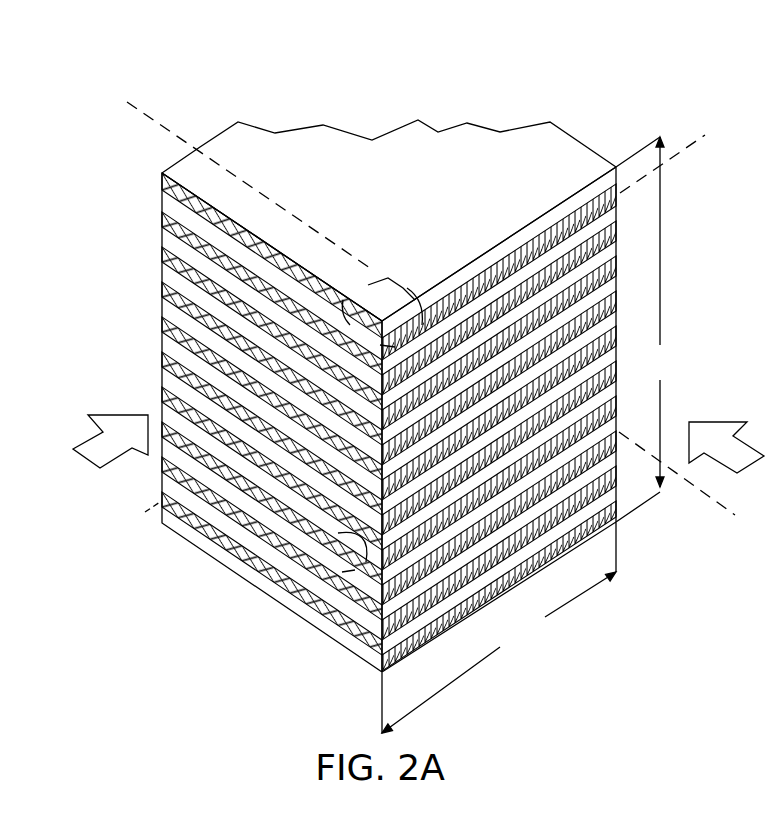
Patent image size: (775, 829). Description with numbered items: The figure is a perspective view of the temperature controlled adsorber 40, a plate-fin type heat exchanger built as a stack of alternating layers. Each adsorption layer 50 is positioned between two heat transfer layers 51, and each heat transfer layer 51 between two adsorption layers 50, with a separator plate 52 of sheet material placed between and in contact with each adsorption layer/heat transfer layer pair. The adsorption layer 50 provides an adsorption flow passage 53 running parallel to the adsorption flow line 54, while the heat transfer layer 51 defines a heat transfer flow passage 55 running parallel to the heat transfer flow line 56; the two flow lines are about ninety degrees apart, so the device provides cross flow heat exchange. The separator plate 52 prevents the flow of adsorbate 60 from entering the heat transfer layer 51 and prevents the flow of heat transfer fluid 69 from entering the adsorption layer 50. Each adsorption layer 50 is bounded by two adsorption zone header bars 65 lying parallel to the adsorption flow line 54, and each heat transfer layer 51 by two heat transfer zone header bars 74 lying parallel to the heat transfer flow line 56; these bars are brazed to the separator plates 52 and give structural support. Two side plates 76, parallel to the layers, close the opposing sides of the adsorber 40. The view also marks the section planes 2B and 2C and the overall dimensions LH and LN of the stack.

The temperature controlled adsorber 40 is at (100, 130).
The adsorption layer 50 is at (210, 282).
The heat transfer layer 51 is at (602, 300).
The separator plate 52 is at (562, 563).
The adsorption flow passage 53 is at (190, 393).
The adsorption flow line 54 is at (123, 526).
The heat transfer flow passage 55 is at (472, 562).
The heat transfer flow line 56 is at (704, 500).
The flow of adsorbate 60 is at (85, 442).
The adsorption zone header bar 65 is at (162, 176).
The flow of heat transfer fluid 69 is at (733, 422).
The heat transfer zone header bar 74 is at (320, 587).
The side plate 76 is at (590, 153).
The section 2B is at (385, 270).
The section 2C is at (305, 563).
The height dimension LH is at (499, 652).
The length dimension LN is at (643, 329).